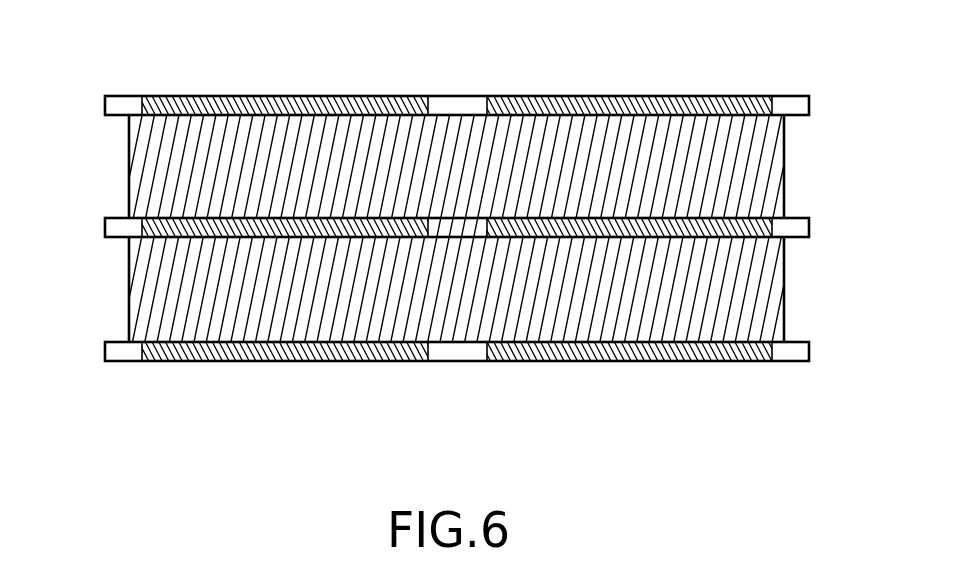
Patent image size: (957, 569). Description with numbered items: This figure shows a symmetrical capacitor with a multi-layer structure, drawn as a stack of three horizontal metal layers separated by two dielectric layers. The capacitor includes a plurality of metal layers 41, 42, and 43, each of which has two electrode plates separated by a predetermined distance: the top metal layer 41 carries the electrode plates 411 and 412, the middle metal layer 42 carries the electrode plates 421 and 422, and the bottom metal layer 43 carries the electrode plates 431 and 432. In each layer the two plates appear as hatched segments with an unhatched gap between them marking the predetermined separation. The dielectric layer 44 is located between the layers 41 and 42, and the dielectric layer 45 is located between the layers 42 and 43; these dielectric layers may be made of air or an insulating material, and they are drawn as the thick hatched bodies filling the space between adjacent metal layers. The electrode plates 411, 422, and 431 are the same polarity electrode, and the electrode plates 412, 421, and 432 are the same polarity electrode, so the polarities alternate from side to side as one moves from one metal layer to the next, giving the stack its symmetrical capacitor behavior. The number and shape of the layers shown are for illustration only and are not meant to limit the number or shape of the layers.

The metal layer 41 is at (105, 103).
The electrode plate 411 is at (306, 99).
The electrode plate 412 is at (652, 98).
The metal layer 42 is at (105, 227).
The electrode plate 421 is at (605, 215).
The electrode plate 422 is at (258, 215).
The metal layer 43 is at (105, 350).
The electrode plate 431 is at (283, 348).
The electrode plate 432 is at (625, 348).
The dielectric layer 44 is at (784, 155).
The dielectric layer 45 is at (784, 280).